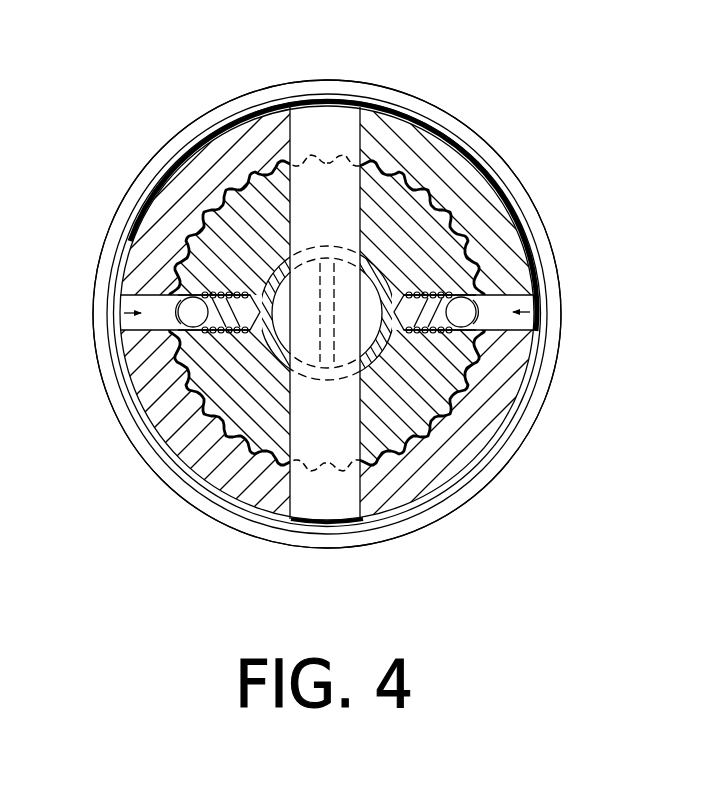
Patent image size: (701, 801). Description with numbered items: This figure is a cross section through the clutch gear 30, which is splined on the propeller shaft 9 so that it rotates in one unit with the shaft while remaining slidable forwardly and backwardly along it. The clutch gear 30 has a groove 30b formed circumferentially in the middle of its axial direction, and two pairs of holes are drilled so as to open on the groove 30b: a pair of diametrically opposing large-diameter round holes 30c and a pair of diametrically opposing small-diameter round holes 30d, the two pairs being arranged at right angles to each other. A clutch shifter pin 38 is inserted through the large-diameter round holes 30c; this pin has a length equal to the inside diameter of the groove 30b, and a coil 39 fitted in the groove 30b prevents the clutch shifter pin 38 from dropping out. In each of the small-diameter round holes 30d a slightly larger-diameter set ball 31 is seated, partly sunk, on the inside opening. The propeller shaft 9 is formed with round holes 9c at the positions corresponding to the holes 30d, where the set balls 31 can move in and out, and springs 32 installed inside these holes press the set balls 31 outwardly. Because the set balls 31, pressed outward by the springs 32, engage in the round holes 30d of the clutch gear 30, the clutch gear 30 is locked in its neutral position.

The propeller shaft 9 is at (398, 231).
The round holes 9c is at (192, 240).
The clutch gear 30 is at (182, 134).
The groove 30b is at (192, 501).
The large-diameter round holes 30c is at (358, 103).
The small-diameter round holes 30d is at (118, 316).
The set ball 31 is at (187, 330).
The spring 32 is at (250, 336).
The clutch shifter pin 38 is at (320, 133).
The coil 39 is at (427, 517).